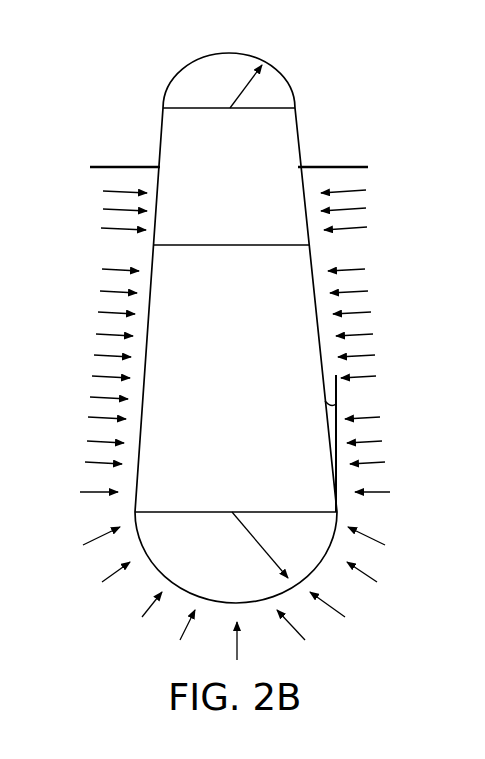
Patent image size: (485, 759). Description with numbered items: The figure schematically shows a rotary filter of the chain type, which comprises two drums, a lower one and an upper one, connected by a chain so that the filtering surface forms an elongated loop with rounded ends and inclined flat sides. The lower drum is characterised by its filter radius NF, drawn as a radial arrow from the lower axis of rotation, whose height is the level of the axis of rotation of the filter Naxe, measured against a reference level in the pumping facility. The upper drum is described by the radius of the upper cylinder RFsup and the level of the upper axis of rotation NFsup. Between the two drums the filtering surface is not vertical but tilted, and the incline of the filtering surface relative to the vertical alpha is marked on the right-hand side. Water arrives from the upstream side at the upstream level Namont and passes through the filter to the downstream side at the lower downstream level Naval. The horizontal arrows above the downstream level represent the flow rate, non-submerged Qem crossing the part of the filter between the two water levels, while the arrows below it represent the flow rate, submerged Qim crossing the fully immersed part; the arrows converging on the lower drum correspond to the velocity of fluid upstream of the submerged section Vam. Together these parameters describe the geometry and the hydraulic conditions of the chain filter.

The radius of the upper cylinder RFsup is at (261, 68).
The level of the upper axis of rotation NFsup is at (229, 125).
The upstream level Namont is at (236, 149).
The downstream level Naval is at (231, 229).
The flow rate, non-submerged Qem is at (206, 206).
The flow rate, submerged Qim is at (205, 334).
The velocity of fluid upstream of the submerged section Vam is at (206, 538).
The incline of the filtering surface relative to the vertical alpha is at (343, 443).
The level of the axis of rotation of the filter Naxe is at (236, 494).
The filter radius NF is at (272, 545).